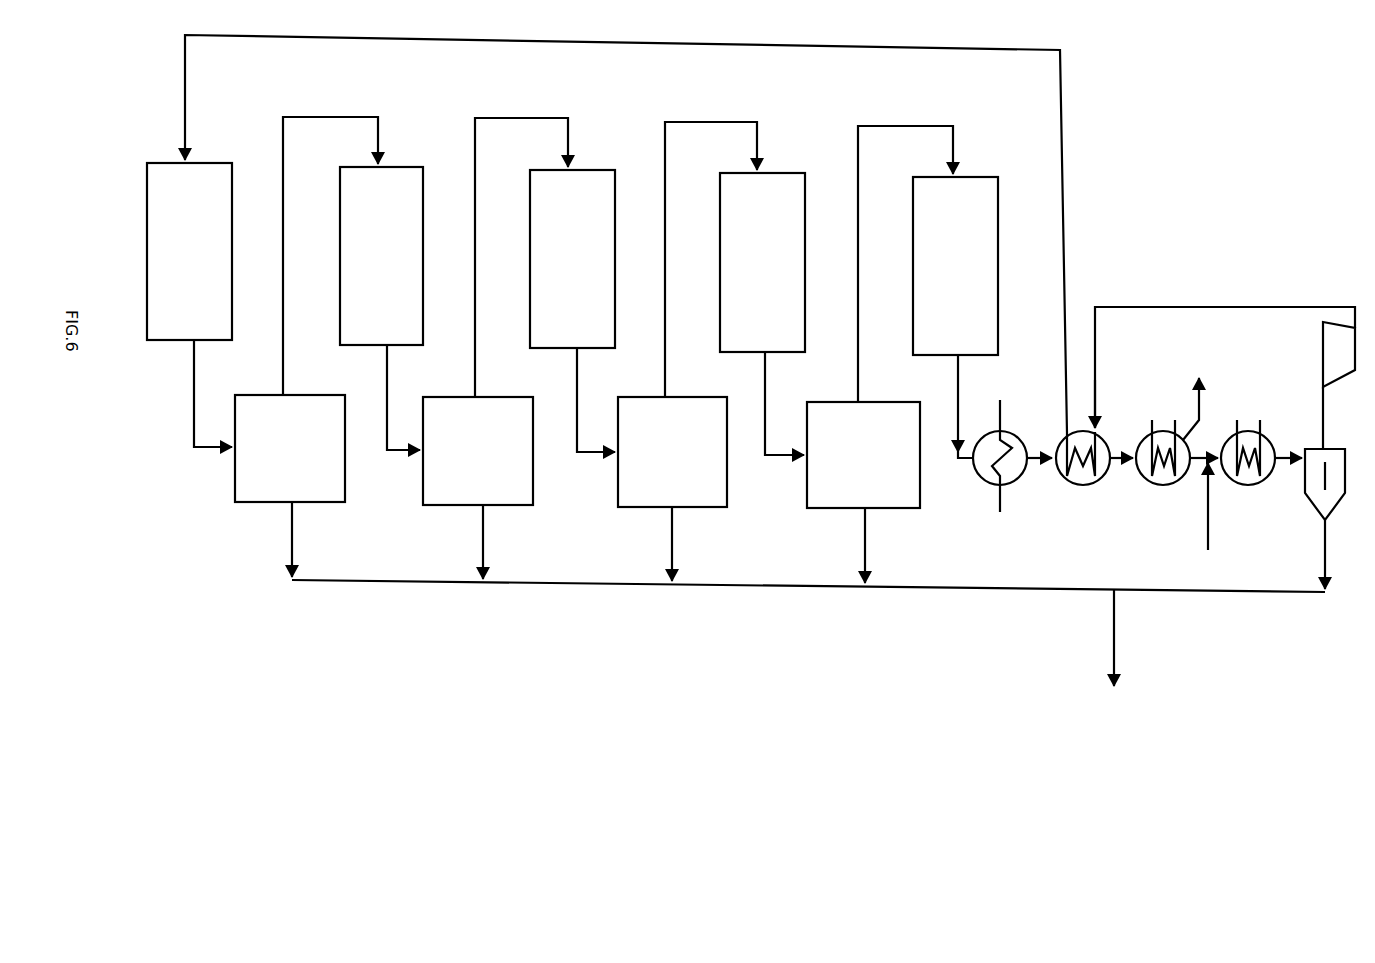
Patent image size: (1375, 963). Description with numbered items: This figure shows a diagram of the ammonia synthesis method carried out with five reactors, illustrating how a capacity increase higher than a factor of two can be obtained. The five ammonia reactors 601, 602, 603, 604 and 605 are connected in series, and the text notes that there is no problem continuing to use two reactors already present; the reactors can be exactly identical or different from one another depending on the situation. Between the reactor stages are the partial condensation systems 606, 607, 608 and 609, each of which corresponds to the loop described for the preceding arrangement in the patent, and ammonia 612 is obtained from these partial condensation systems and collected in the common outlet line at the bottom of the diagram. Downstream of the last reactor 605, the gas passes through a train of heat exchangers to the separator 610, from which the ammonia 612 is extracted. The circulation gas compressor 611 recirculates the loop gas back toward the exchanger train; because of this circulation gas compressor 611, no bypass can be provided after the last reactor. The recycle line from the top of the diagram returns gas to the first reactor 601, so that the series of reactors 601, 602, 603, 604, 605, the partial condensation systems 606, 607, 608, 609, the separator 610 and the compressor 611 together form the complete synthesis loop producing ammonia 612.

The ammonia reactor 601 is at (189, 251).
The ammonia reactor 602 is at (381, 256).
The ammonia reactor 603 is at (572, 259).
The ammonia reactor 604 is at (762, 262).
The ammonia reactor 605 is at (955, 266).
The partial condensation system 606 is at (290, 448).
The partial condensation system 607 is at (478, 451).
The partial condensation system 608 is at (672, 452).
The partial condensation system 609 is at (863, 455).
The separator 610 is at (1305, 515).
The circulation gas compressor 611 is at (1323, 350).
The ammonia 612 is at (1119, 661).